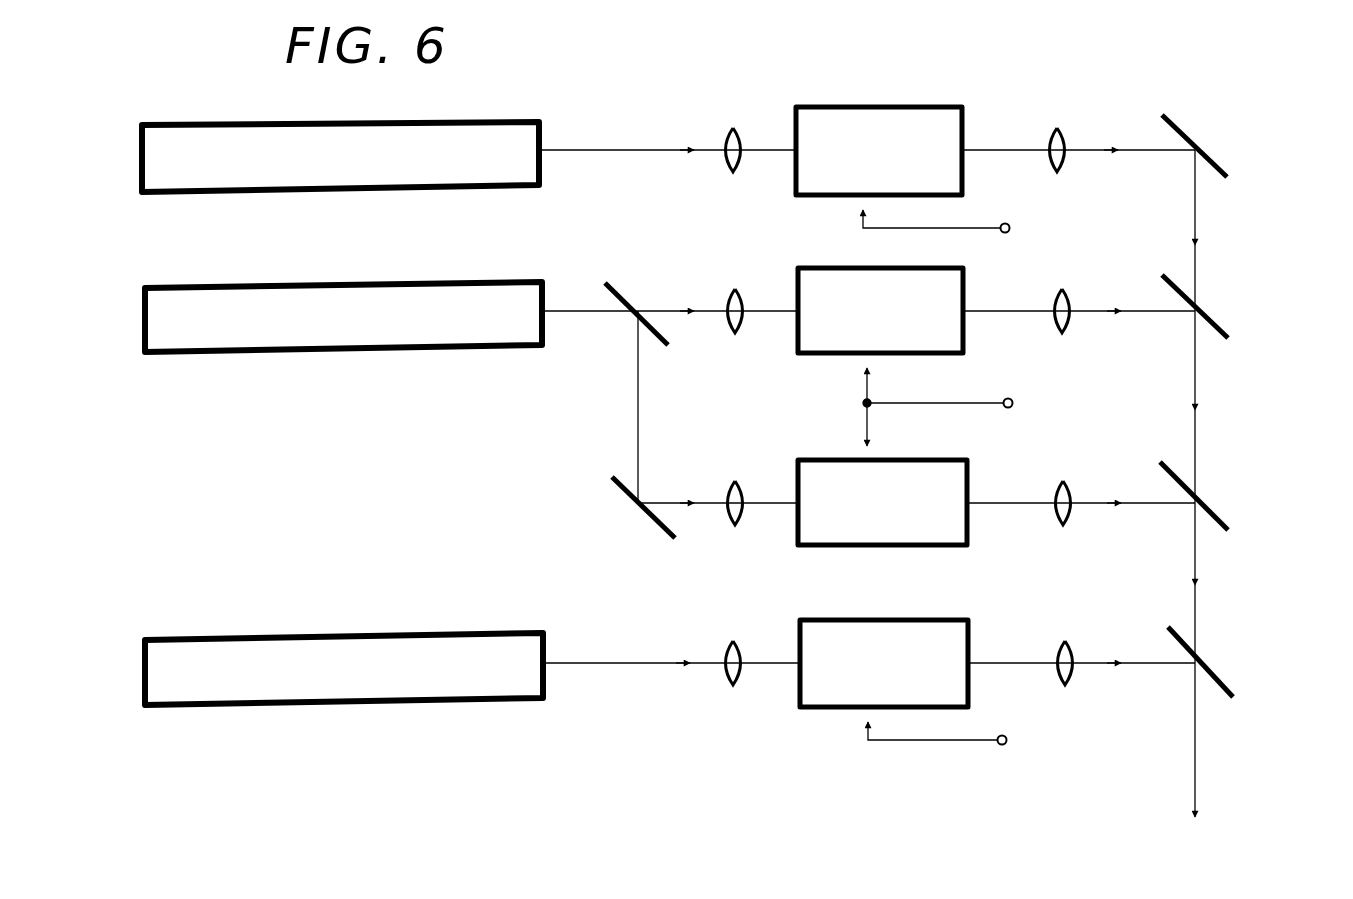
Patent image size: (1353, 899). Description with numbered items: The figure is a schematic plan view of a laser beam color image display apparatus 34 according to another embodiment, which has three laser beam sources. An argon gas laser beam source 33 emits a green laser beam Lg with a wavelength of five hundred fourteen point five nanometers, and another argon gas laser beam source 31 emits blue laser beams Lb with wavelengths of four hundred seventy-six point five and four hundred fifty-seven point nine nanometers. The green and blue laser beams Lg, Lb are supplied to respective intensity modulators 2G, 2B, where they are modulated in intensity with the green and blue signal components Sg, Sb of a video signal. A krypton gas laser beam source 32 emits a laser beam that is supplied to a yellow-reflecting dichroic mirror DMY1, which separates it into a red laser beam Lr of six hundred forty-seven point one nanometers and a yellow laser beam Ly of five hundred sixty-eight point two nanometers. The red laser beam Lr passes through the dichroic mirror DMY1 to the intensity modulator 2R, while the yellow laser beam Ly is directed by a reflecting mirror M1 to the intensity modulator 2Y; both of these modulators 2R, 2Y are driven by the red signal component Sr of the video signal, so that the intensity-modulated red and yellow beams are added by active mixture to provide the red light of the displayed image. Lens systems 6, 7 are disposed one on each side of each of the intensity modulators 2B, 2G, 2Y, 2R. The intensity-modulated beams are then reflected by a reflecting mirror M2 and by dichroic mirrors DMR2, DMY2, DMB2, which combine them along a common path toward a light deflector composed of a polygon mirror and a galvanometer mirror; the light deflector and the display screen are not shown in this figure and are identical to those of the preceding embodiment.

The laser beam color image display apparatus 34 is at (104, 119).
The argon gas laser beam source 33 is at (407, 193).
The krypton gas laser beam source 32 is at (410, 352).
The argon gas laser beam source 31 is at (392, 634).
The lens system 6 is at (737, 128).
The lens system 7 is at (1057, 128).
The intensity modulator 2G is at (906, 107).
The intensity modulator 2R is at (835, 355).
The intensity modulator 2Y is at (845, 547).
The intensity modulator 2B is at (838, 709).
The reflecting mirror M1 is at (620, 485).
The reflecting mirror M2 is at (1219, 167).
The yellow-reflecting dichroic mirror DMY1 is at (618, 293).
The dichroic mirror DMR2 is at (1214, 323).
The yellow-reflecting dichroic mirror DMY2 is at (1214, 519).
The blue-reflecting dichroic mirror DMB2 is at (1210, 681).
The green laser beam Lg is at (641, 151).
The red laser beam Lr is at (707, 313).
The yellow laser beam Ly is at (712, 505).
The blue laser beams Lb is at (641, 665).
The green signal component Sg is at (954, 227).
The red signal component Sr is at (954, 407).
The blue signal component Sb is at (957, 739).